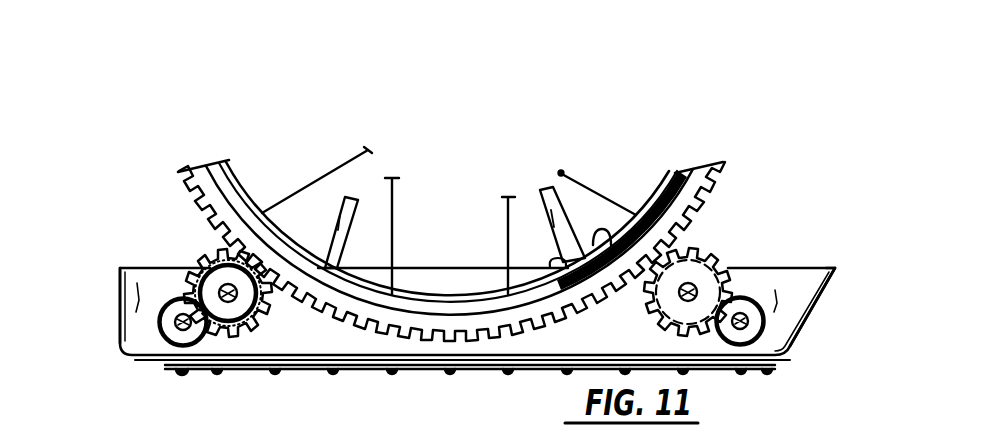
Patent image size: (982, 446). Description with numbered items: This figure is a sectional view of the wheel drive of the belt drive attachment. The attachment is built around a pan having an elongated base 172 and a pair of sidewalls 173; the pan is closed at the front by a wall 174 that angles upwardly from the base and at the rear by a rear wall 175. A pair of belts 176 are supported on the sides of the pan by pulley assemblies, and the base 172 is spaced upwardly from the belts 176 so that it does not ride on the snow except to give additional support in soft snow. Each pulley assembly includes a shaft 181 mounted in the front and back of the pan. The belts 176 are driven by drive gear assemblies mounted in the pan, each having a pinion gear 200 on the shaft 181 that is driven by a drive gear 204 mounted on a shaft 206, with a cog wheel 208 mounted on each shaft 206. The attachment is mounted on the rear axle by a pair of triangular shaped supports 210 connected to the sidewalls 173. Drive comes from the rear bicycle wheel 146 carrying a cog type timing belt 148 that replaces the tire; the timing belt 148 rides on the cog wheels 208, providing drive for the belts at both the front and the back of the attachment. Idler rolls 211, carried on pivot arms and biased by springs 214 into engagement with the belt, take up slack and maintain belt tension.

The rear bicycle wheel 146 is at (228, 170).
The cog type timing belt 148 is at (727, 167).
The elongated base 172 is at (250, 362).
The sidewalls 173 is at (823, 268).
The front wall 174 is at (811, 314).
The rear wall 175 is at (118, 311).
The belts 176 is at (372, 370).
The shaft 181 is at (180, 323).
The pinion gear 200 is at (163, 307).
The drive gear 204 is at (210, 257).
The shaft 206 is at (232, 296).
The cog wheel 208 is at (197, 267).
The triangular shaped supports 210 is at (480, 207).
The idler rolls 211 is at (602, 228).
The springs 214 is at (484, 272).